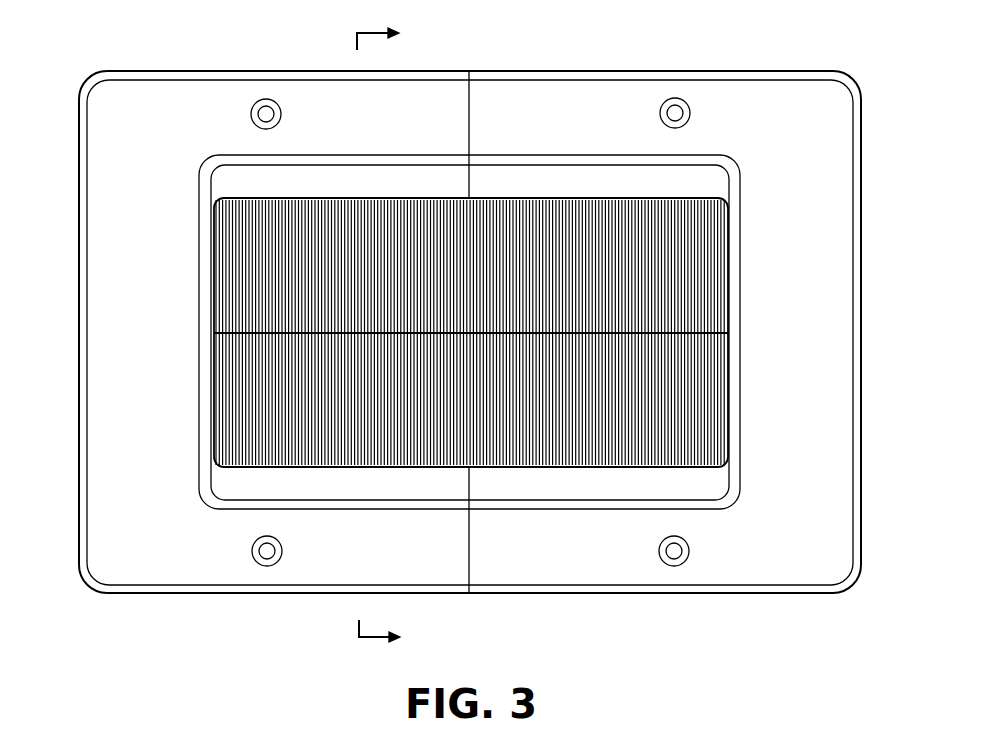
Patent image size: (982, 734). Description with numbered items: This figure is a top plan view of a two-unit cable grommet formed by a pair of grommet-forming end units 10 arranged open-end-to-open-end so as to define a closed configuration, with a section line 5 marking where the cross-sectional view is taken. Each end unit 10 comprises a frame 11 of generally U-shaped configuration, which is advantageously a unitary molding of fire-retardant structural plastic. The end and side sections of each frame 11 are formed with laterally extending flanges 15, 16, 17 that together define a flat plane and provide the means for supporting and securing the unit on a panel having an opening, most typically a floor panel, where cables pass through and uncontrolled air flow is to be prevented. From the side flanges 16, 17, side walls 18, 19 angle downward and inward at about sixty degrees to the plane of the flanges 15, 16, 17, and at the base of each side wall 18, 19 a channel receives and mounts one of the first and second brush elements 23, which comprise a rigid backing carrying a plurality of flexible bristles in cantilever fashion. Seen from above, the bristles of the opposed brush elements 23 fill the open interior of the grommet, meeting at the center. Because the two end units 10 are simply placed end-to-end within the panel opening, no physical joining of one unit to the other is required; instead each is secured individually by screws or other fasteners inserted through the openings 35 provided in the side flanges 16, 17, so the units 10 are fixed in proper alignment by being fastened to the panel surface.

The grommet-forming end unit 10 is at (167, 347).
The frame 11 is at (810, 560).
The end flange 15 is at (107, 467).
The side flange 16 is at (610, 100).
The side flange 17 is at (317, 100).
The side wall 18 is at (548, 178).
The side wall 19 is at (393, 178).
The brush element 23 is at (267, 265).
The fastener opening 35 is at (674, 100).
The section line 5- 5 is at (388, 338).